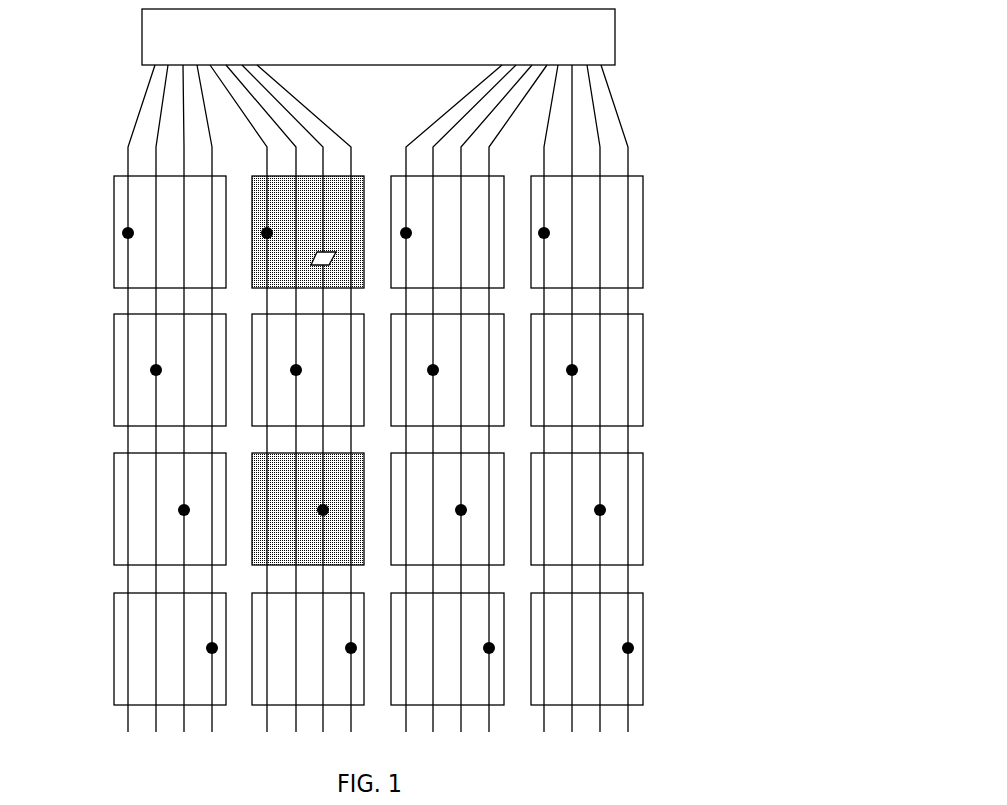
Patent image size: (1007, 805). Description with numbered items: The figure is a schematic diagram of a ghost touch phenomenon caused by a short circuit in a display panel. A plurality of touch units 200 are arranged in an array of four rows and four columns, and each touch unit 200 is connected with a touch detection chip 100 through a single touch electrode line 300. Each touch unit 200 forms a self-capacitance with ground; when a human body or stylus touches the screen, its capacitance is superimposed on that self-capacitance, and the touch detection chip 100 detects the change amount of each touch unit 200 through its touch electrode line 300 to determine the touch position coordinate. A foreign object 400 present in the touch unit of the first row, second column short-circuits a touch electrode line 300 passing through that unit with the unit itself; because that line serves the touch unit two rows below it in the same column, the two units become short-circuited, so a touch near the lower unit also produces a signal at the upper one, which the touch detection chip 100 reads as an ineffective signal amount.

The touch detection chip 100 is at (540, 51).
The touch unit 200 is at (643, 215).
The touch electrode line 300 is at (617, 113).
The foreign object 400 is at (318, 267).